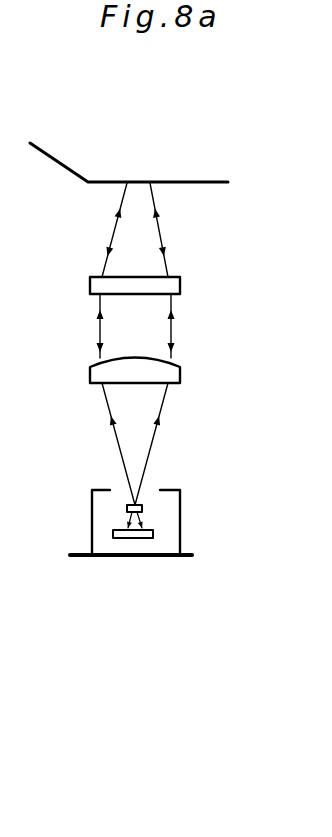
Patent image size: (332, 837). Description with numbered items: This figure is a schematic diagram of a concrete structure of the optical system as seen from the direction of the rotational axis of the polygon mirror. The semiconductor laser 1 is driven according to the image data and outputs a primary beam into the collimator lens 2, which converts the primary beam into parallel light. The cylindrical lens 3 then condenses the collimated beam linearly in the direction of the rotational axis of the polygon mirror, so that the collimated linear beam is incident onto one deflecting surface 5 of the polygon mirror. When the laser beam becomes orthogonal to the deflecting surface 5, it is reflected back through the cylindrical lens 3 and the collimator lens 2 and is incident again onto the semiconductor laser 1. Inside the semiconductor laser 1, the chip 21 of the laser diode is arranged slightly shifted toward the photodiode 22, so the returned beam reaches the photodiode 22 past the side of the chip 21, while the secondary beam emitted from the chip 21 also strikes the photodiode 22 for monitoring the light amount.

The semiconductor laser 1 is at (187, 477).
The collimator lens 2 is at (180, 376).
The cylindrical lens 3 is at (180, 286).
The deflecting surface 5 is at (212, 183).
The chip of the laser diode 21 is at (142, 507).
The photodiode 22 is at (153, 534).